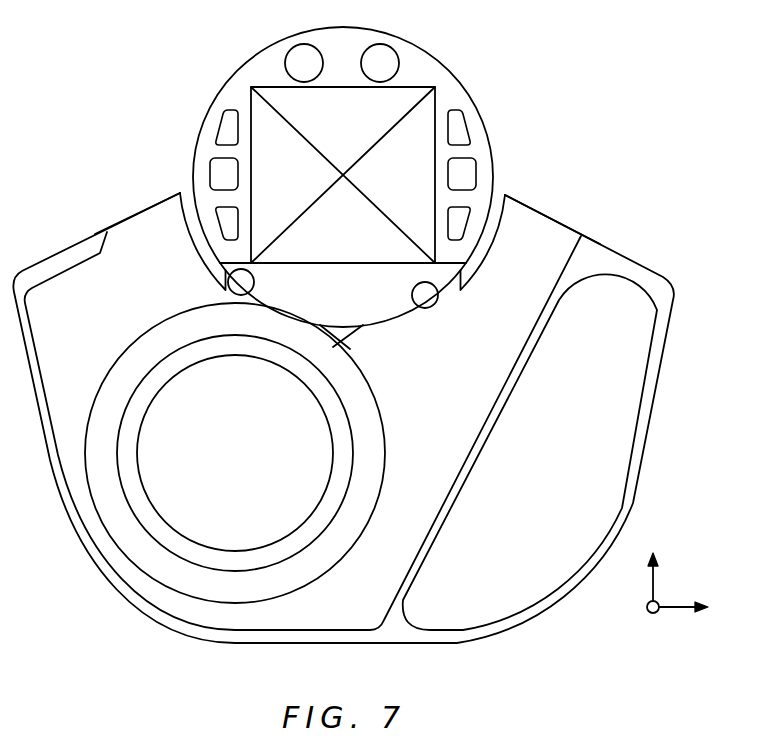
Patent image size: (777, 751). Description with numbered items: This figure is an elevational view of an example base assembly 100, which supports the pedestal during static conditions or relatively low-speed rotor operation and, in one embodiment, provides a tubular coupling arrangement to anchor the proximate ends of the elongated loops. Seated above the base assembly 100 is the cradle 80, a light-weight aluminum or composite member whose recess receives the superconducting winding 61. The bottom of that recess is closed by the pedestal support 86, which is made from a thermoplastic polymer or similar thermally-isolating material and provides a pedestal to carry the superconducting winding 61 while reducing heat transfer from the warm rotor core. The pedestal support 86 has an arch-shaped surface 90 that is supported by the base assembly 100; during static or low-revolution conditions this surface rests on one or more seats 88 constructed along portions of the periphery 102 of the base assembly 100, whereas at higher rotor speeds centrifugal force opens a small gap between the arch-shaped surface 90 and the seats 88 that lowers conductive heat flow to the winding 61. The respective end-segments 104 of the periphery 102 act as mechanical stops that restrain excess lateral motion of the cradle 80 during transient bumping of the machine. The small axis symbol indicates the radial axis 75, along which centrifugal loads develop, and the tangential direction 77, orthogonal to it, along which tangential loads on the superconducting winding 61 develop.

The superconducting winding 61 is at (356, 130).
The radial axis 75 is at (657, 575).
The tangential direction 77 is at (672, 612).
The cradle 80 is at (434, 58).
The pedestal support 86 is at (308, 280).
The seats 88 is at (220, 283).
The arch-shaped surface 90 is at (353, 344).
The base assembly 100 is at (675, 398).
The periphery 102 is at (180, 192).
The end-segments 104 is at (186, 196).